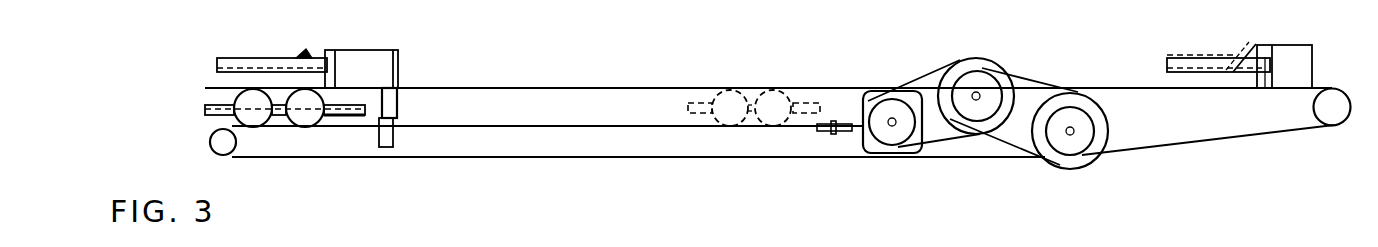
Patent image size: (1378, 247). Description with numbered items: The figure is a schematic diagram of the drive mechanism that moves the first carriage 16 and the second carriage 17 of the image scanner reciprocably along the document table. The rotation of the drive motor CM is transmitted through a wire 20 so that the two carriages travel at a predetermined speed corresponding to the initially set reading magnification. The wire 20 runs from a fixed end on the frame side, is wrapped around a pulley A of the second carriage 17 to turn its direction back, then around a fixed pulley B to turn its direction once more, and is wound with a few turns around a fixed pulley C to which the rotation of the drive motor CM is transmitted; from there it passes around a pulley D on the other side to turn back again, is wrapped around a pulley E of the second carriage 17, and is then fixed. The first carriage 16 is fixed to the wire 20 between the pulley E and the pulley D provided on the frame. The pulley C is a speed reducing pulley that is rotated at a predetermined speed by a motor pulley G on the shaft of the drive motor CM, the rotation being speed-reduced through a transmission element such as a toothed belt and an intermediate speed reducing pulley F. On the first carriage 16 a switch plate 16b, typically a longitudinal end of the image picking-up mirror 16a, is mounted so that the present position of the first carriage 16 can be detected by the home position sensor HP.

The first carriage 16 is at (338, 50).
The image picking-up mirror 16a is at (297, 51).
The switch plate 16b is at (398, 110).
The home position sensor HP is at (394, 140).
The second carriage 17 is at (348, 116).
The wire 20 is at (612, 127).
The pulley A is at (254, 120).
The fixed pulley B is at (210, 140).
The pulley E is at (305, 120).
The drive motor CM is at (868, 153).
The motor pulley G is at (895, 141).
The intermediate speed reducing pulley F is at (977, 57).
The fixed pulley C is at (1070, 170).
The pulley D is at (1332, 126).